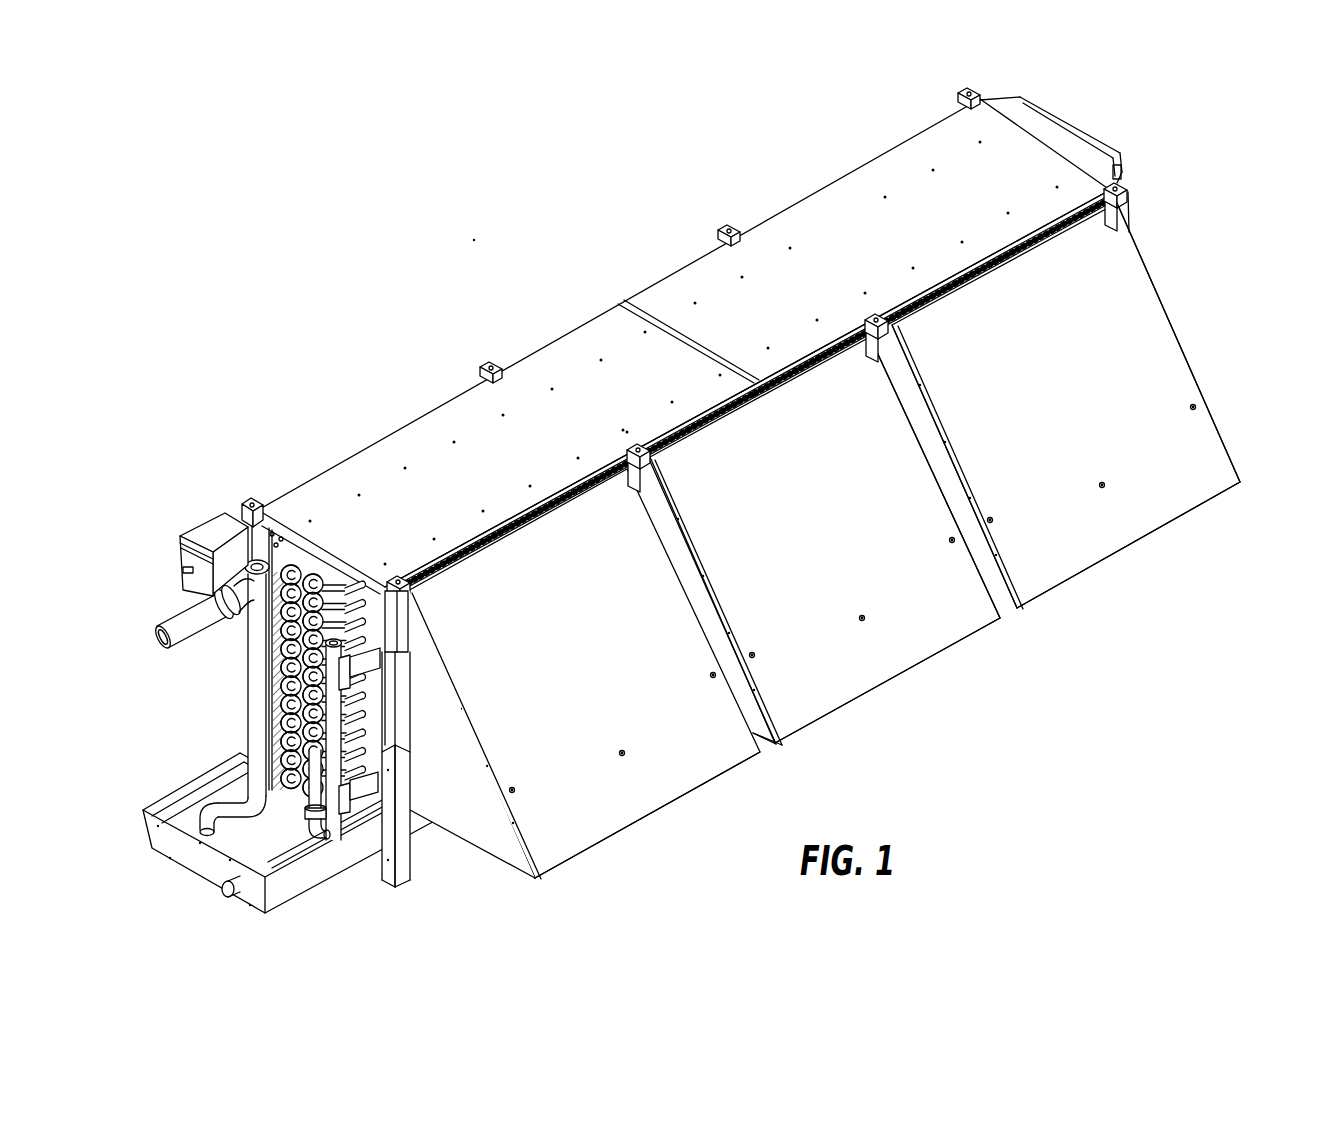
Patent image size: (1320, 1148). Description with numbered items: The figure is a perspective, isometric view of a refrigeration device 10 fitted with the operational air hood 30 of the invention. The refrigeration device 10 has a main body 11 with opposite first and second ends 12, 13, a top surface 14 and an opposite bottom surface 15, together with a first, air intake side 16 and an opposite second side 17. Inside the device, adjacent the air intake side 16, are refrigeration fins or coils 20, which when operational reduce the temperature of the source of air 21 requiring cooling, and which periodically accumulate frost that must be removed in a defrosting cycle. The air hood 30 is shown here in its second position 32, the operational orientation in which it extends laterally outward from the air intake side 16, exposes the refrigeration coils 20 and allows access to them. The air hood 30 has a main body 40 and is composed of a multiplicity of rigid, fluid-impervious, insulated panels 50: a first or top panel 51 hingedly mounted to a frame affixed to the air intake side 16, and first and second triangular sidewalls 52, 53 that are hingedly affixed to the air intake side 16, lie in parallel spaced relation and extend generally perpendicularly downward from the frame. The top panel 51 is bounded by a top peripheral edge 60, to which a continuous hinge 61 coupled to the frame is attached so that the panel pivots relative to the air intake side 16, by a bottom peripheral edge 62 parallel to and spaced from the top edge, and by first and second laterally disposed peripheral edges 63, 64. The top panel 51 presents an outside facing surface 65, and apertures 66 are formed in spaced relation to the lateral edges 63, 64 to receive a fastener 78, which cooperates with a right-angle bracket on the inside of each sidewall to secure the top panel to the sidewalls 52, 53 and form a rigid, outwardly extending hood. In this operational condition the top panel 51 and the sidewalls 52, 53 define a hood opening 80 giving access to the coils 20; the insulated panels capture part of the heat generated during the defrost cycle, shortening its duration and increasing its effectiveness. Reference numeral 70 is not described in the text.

The refrigeration device 10 is at (611, 306).
The main body 11 is at (1138, 166).
The first end 12 is at (681, 444).
The second end 13 is at (1051, 134).
The top surface 14 is at (840, 286).
The bottom surface 15 is at (432, 747).
The air intake side 16 is at (747, 352).
The second side 17 is at (534, 400).
The refrigeration fins or coils 20 is at (264, 681).
The source of air 21 is at (1147, 676).
The air hood 30 is at (1007, 612).
The second position 32 is at (864, 540).
The main body 40 is at (1192, 342).
The multiplicity of panels 50 is at (636, 810).
The top panel 51 is at (583, 673).
The first sidewall 52 is at (473, 735).
The second sidewall 53 is at (637, 457).
The top peripheral edge 60 is at (932, 296).
The continuous hinge 61 is at (576, 480).
The bottom peripheral edge 62 is at (1066, 405).
The first laterally disposed peripheral edge 63 is at (719, 602).
The second laterally disposed peripheral edge 64 is at (935, 477).
The outside facing surface 65 is at (825, 540).
The aperture 66 is at (852, 593).
The end gusset 70 is at (472, 735).
The fastener 78 is at (552, 776).
The hood opening 80 is at (751, 773).